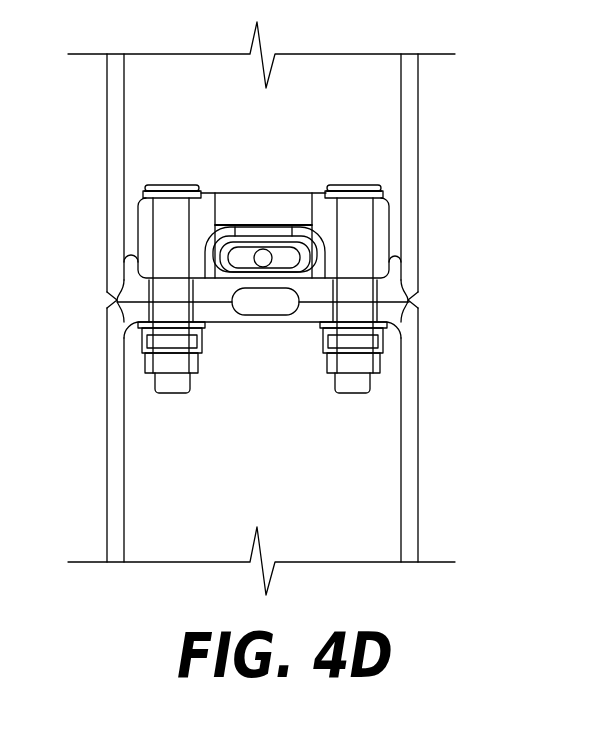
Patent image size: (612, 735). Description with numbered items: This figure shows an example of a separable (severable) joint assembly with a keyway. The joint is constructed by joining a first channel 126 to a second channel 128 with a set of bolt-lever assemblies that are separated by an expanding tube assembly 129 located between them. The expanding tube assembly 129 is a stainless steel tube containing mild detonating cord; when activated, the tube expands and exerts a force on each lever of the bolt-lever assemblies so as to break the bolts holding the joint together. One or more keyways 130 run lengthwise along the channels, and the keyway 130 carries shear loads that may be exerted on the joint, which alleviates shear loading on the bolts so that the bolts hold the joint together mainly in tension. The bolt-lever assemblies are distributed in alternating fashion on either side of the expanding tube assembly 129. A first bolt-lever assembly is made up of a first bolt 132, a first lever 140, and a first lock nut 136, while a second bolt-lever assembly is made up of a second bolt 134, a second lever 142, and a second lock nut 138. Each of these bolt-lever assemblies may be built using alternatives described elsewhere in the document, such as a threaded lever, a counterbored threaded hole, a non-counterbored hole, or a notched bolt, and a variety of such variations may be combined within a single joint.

The first channel 126 is at (419, 455).
The second channel 128 is at (419, 125).
The expanding tube assembly 129 is at (262, 244).
The keyway 130 is at (265, 316).
The first bolt 132 is at (368, 188).
The second bolt 134 is at (158, 186).
The first lock nut 136 is at (385, 350).
The second lock nut 138 is at (141, 341).
The first lever 140 is at (389, 261).
The second lever 142 is at (128, 262).